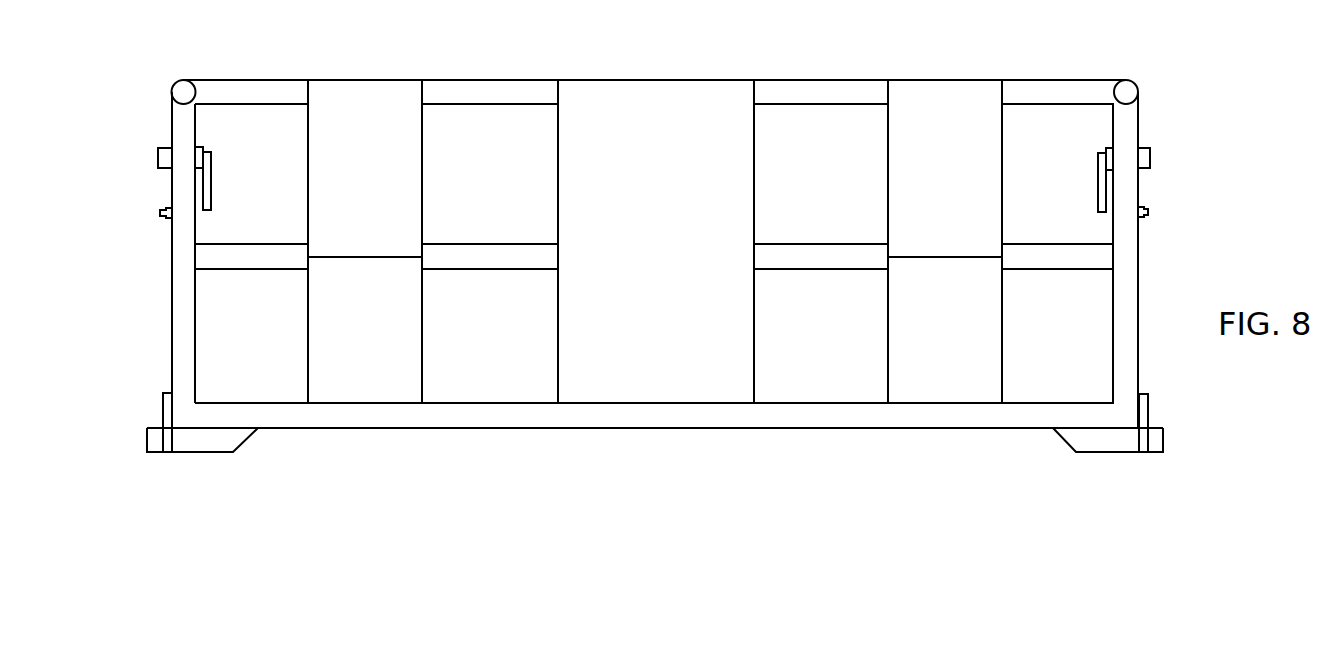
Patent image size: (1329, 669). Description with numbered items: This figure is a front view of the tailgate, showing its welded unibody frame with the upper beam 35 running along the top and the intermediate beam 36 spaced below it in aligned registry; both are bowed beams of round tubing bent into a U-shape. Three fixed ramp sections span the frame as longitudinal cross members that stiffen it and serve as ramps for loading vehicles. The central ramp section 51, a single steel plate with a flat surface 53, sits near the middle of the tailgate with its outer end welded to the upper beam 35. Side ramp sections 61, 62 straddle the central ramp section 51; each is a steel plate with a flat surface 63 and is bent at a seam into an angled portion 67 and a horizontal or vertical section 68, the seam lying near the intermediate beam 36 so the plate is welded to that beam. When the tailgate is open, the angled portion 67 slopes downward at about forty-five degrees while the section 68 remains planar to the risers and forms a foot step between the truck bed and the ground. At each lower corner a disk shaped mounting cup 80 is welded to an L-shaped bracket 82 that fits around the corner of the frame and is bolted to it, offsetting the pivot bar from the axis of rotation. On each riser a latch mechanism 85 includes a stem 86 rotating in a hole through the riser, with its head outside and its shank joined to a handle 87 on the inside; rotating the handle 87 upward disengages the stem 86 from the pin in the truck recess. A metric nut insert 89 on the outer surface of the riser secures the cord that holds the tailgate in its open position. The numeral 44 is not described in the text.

The upper beam 35 is at (813, 87).
The intermediate beam 36 is at (783, 250).
The frame member 44 is at (872, 86).
The central ramp section 51 is at (745, 140).
The flat surface 53 is at (665, 266).
The side ramp section 61 is at (1003, 297).
The side ramp section 62 is at (413, 298).
The flat surface 63 is at (370, 338).
The angled portion 67 is at (413, 342).
The horizontal or vertical section 68 is at (410, 153).
The mounting cup 80 is at (153, 452).
The L-shaped bracket 82 is at (1150, 406).
The latch mechanism 85 is at (199, 148).
The stem 86 is at (1151, 160).
The handle 87 is at (1097, 188).
The metric nut insert 89 is at (1150, 211).